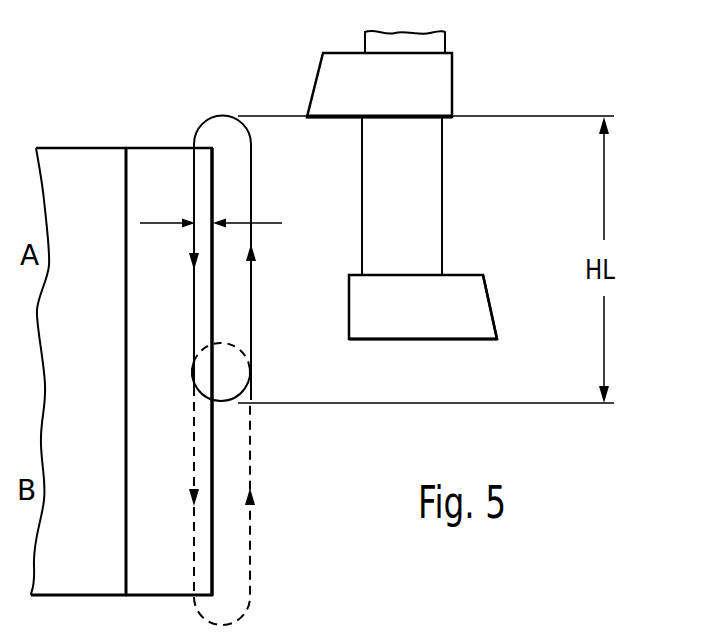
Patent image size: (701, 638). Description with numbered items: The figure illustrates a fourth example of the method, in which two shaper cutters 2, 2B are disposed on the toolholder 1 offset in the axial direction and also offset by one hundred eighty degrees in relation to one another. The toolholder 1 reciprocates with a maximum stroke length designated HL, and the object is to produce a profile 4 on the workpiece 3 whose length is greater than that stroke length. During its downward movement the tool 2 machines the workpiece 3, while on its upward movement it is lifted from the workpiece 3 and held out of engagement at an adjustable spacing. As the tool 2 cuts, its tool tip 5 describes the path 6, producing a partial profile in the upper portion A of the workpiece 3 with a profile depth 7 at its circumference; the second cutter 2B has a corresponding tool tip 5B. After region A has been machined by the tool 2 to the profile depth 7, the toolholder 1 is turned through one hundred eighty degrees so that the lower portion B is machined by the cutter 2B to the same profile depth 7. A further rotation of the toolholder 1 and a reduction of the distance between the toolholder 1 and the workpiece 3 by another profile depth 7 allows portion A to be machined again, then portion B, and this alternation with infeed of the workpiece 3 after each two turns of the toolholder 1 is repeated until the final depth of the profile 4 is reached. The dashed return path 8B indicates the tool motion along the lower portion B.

The toolholder 1 is at (373, 42).
The tool 2 is at (442, 90).
The tool tip 5 is at (307, 118).
The shaper cutter 2B is at (465, 285).
The tool tip 5B is at (497, 339).
The path 6 is at (252, 318).
The profile depth 7 is at (204, 222).
The workpiece 3 is at (84, 571).
The profile 4 is at (161, 571).
The return path 8B is at (250, 543).